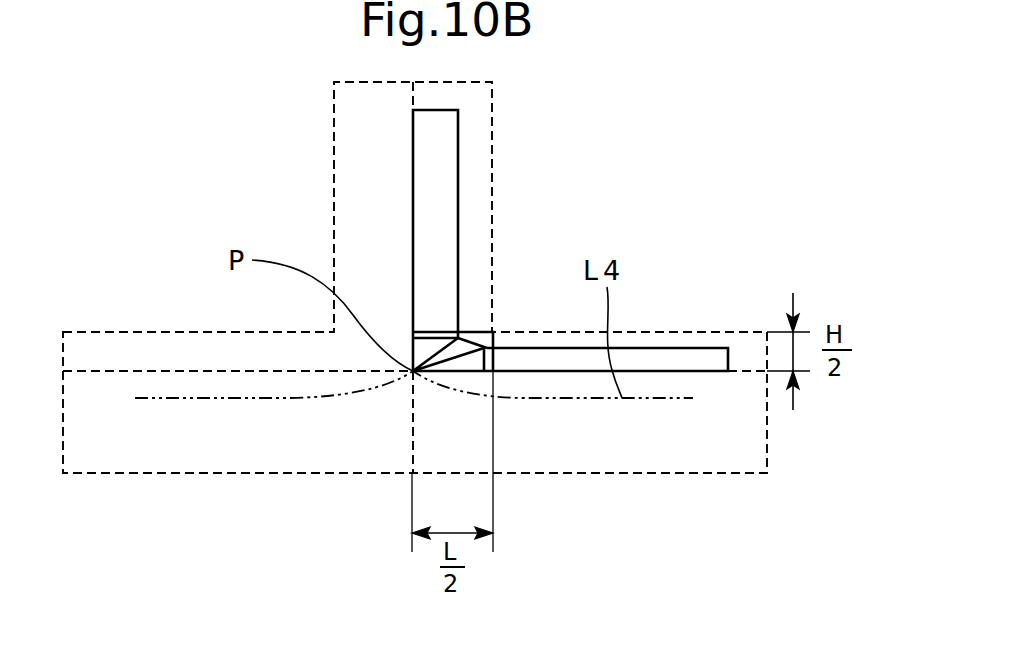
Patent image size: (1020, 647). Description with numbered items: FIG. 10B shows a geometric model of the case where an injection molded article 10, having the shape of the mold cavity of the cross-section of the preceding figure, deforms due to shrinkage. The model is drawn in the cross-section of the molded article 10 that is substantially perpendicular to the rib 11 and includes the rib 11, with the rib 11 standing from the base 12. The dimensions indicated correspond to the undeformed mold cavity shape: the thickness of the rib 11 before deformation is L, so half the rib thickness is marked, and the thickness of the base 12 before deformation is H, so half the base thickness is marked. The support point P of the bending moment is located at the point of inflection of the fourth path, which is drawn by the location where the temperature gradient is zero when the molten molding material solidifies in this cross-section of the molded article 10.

The injection molded article 10 is at (663, 206).
The rib 11 is at (458, 158).
The base 12 is at (697, 348).